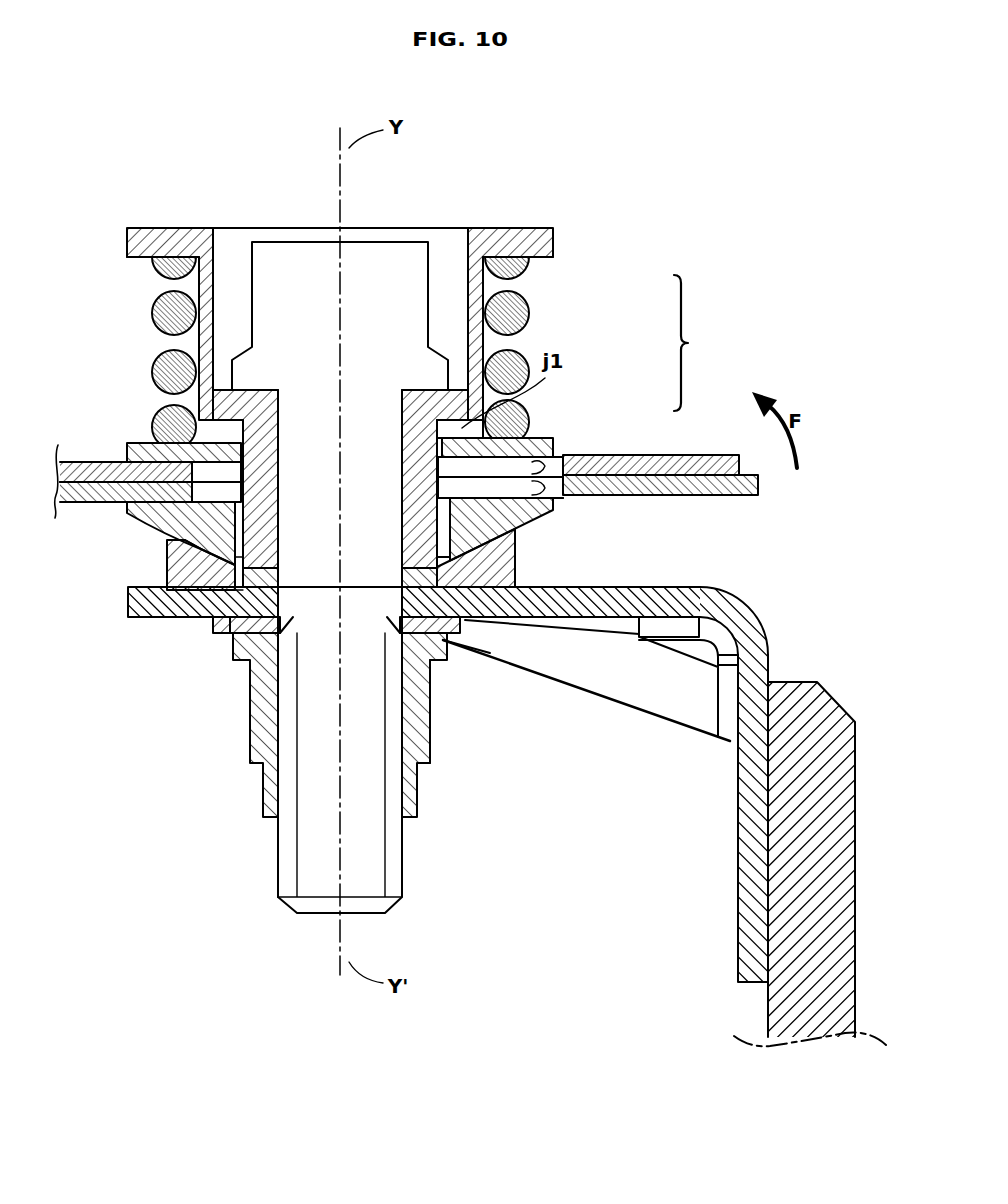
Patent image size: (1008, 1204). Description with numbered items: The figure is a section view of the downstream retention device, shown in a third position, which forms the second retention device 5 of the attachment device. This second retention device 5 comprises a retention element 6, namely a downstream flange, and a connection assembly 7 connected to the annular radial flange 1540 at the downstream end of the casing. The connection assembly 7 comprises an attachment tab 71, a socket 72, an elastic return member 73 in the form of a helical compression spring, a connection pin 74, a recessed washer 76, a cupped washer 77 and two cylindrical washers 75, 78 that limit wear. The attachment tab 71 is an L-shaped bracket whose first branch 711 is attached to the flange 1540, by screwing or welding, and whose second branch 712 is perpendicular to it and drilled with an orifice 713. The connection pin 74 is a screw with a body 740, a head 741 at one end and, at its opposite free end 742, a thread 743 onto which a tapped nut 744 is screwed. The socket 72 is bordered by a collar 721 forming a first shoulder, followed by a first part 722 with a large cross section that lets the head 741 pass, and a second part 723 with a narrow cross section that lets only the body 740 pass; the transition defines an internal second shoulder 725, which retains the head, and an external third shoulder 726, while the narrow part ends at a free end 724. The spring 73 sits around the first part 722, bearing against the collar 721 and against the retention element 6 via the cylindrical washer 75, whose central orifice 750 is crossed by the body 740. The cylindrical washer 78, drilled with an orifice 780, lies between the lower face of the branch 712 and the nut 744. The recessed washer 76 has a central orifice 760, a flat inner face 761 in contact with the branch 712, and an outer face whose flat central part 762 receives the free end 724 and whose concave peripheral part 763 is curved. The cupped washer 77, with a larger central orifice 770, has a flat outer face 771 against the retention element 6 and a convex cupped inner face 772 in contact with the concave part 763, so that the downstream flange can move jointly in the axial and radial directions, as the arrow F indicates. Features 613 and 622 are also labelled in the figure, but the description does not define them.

The second retention device 5 is at (691, 343).
The retention element 6 is at (662, 448).
The connection assembly 7 is at (620, 320).
The attachment tab 71 is at (760, 598).
The socket 72 is at (516, 222).
The elastic return member 73 is at (545, 314).
The connection pin 74 is at (383, 224).
The cylindrical washer 75 is at (180, 445).
The recessed washer 76 is at (211, 581).
The cupped washer 77 is at (496, 530).
The cylindrical washer 78 is at (232, 625).
The first branch 711 is at (752, 830).
The second branch 712 is at (622, 602).
The orifice 713 is at (494, 600).
The collar 721 is at (535, 243).
The first part with large cross section 722 is at (204, 290).
The second part with narrow cross section 723 is at (418, 505).
The free end 724 is at (268, 580).
The second shoulder 725 is at (223, 378).
The third shoulder 726 is at (238, 470).
The body 740 is at (325, 478).
The head 741 is at (325, 321).
The free end 742 is at (325, 789).
The thread 743 is at (285, 855).
The tapped nut 744 is at (413, 718).
The central orifice 750 is at (240, 450).
The central orifice 760 is at (445, 582).
The flat radially inner face 761 is at (580, 688).
The central flat part 762 is at (268, 590).
The concave peripheral part 763 is at (206, 540).
The central orifice 770 is at (259, 558).
The flat outer face 771 is at (500, 483).
The convex cupped inner face 772 is at (143, 534).
The orifice 780 is at (420, 630).
The pin end 613 is at (540, 467).
The pin end 622 is at (545, 493).
The annular radial flange 1540 is at (788, 861).